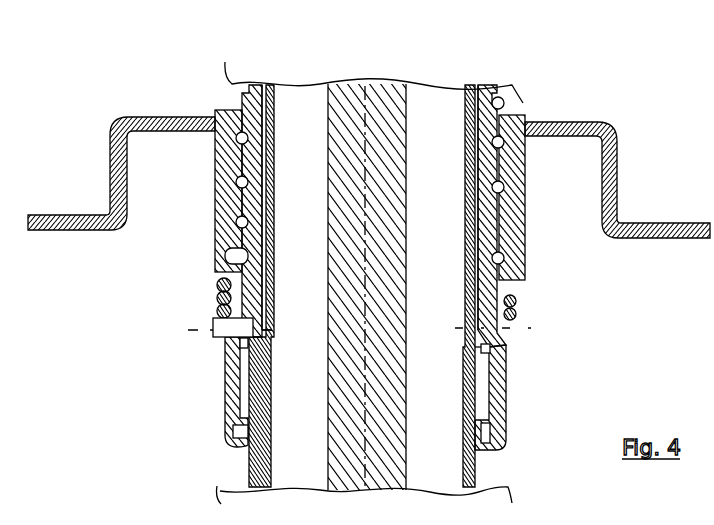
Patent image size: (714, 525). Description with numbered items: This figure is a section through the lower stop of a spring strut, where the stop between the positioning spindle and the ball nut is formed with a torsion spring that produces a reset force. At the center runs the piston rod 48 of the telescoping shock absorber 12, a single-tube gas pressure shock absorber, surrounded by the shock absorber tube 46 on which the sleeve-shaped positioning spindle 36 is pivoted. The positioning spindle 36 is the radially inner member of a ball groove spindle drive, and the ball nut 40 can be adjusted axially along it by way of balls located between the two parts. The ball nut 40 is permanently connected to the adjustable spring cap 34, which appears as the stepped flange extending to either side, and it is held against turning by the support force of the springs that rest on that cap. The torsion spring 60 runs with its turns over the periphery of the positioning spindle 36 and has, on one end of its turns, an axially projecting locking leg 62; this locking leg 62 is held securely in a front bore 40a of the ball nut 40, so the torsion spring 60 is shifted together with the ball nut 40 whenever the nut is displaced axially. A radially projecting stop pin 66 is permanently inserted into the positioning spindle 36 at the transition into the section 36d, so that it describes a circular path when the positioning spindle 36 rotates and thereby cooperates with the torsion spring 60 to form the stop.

The telescoping shock absorber 12 is at (248, 452).
The adjustable spring cap 34 is at (110, 167).
The positioning spindle 36 is at (258, 85).
The section of the positioning spindle 36d is at (499, 368).
The ball nut 40 is at (215, 198).
The front bore 40a is at (214, 250).
The shock absorber tube 46 is at (473, 467).
The piston rod 48 is at (407, 270).
The torsion spring 60 is at (208, 302).
The locking leg 62 is at (244, 258).
The stop pin 66 is at (213, 330).